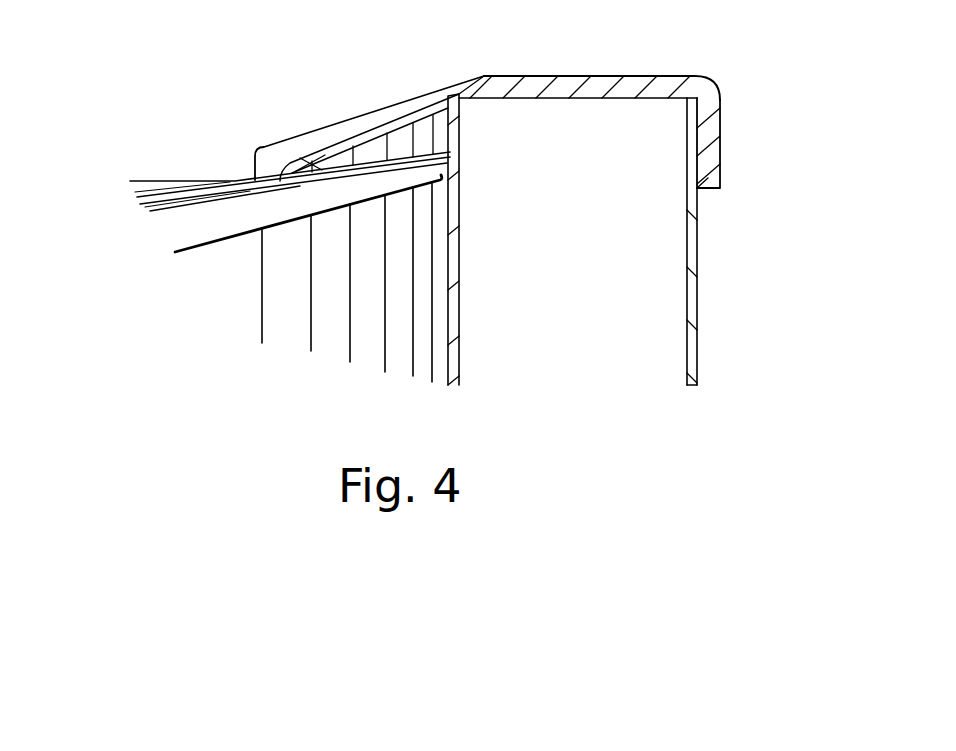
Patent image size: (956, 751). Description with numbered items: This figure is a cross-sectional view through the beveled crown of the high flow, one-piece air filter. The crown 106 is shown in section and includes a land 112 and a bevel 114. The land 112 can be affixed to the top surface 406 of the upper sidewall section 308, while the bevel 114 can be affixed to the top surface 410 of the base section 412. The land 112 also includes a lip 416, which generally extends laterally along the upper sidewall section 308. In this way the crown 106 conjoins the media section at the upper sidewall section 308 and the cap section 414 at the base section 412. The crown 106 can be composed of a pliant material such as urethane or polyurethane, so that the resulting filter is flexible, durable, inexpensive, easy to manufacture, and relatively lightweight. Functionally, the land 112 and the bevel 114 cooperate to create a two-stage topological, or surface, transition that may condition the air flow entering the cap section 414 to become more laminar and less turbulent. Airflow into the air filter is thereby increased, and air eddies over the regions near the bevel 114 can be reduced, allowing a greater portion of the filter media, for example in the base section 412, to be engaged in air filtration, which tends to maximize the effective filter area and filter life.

The crown 106 is at (488, 76).
The land 112 is at (627, 76).
The bevel 114 is at (386, 107).
The upper sidewall section 308 is at (643, 343).
The top surface 406 is at (578, 115).
The top surface 410 is at (318, 196).
The base section 412 is at (218, 180).
The cap section 414 is at (178, 235).
The lip 416 is at (720, 121).